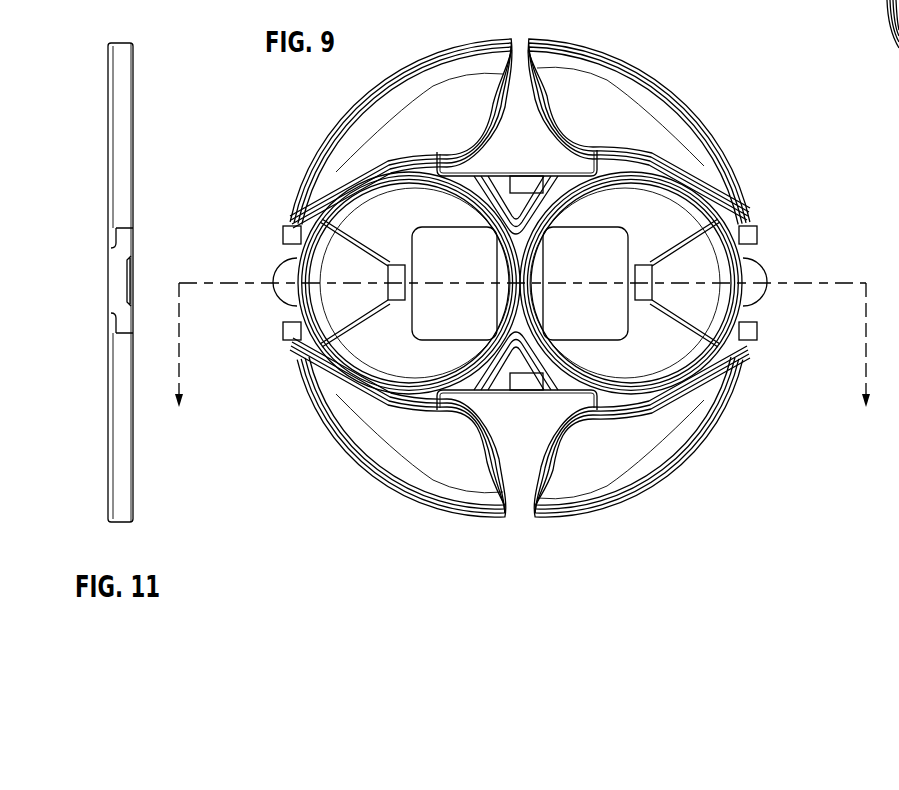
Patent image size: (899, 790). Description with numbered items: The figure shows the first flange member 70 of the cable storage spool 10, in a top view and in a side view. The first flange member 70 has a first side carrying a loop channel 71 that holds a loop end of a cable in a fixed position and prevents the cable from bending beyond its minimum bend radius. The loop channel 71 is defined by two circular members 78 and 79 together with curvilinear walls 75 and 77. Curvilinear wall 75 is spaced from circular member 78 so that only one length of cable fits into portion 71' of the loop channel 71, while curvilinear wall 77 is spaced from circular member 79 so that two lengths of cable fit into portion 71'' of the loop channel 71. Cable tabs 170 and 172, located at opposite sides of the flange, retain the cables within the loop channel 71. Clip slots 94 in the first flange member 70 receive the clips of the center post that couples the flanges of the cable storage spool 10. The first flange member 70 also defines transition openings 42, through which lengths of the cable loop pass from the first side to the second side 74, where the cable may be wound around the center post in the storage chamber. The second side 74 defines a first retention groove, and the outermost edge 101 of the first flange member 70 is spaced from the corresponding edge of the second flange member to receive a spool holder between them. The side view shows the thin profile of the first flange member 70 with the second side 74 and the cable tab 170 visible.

In FIG. 9, the cable storage spool 10 is at (523, 363).
In FIG. 9, the transition openings 42 is at (498, 145).
In FIG. 9, the first flange member 70 is at (706, 80).
In FIG. 11, the first flange member 70 is at (163, 478).
In FIG. 9, the loop channel 71 is at (520, 207).
In FIG. 9, the portion of the loop channel 71' is at (365, 135).
In FIG. 9, the portion of the loop channel 71'' is at (667, 257).
In FIG. 11, the second side 74 is at (105, 146).
In FIG. 9, the curvilinear wall 75 is at (350, 173).
In FIG. 9, the curvilinear wall 77 is at (673, 150).
In FIG. 9, the circular member 78 is at (313, 227).
In FIG. 11, the circular member 78 is at (116, 280).
In FIG. 9, the circular member 79 is at (697, 367).
In FIG. 9, the clip slots 94 is at (523, 178).
In FIG. 9, the outermost edge 101 is at (602, 57).
In FIG. 9, the cable tab 170 is at (288, 291).
In FIG. 11, the cable tab 170 is at (137, 278).
In FIG. 9, the cable tab 172 is at (743, 272).